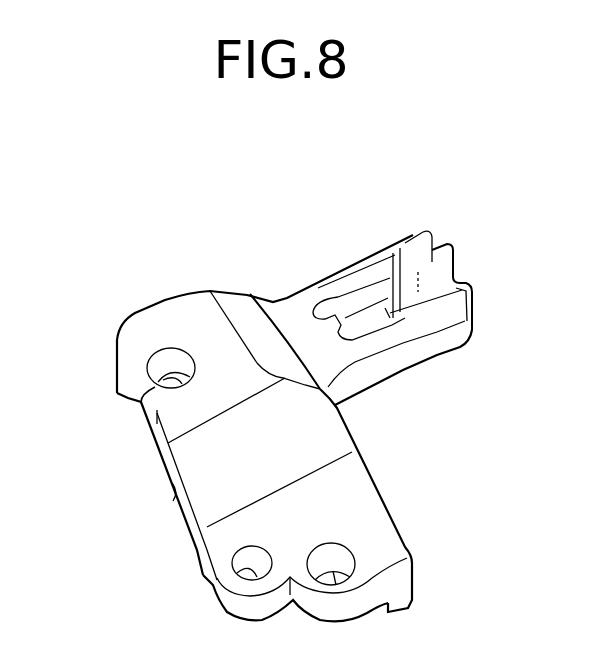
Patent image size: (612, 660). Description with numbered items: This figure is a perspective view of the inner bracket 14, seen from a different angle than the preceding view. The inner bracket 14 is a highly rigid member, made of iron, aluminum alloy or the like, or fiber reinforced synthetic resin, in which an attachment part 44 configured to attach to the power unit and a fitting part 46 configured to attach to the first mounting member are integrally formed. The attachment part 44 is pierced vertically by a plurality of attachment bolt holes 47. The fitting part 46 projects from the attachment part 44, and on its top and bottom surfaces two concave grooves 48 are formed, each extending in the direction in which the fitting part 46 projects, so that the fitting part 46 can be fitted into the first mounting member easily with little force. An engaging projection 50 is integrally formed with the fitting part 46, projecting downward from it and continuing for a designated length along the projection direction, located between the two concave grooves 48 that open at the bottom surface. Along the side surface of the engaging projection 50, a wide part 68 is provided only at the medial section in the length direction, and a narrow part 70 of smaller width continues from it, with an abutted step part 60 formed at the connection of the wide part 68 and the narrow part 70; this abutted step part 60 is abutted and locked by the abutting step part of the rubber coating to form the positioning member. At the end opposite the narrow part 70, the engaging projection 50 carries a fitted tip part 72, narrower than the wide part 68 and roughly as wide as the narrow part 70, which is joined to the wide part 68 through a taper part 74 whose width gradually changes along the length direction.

The inner bracket 14 is at (119, 291).
The attachment part 44 is at (207, 500).
The fitting part 46 is at (315, 292).
The attachment bolt holes 47 is at (155, 378).
The concave grooves 48 is at (466, 283).
The engaging projection 50 is at (463, 196).
The abutted step part 60 is at (385, 310).
The wide part 68 is at (393, 283).
The narrow part 70 is at (365, 287).
The fitted tip part 72 is at (433, 250).
The taper part 74 is at (410, 268).